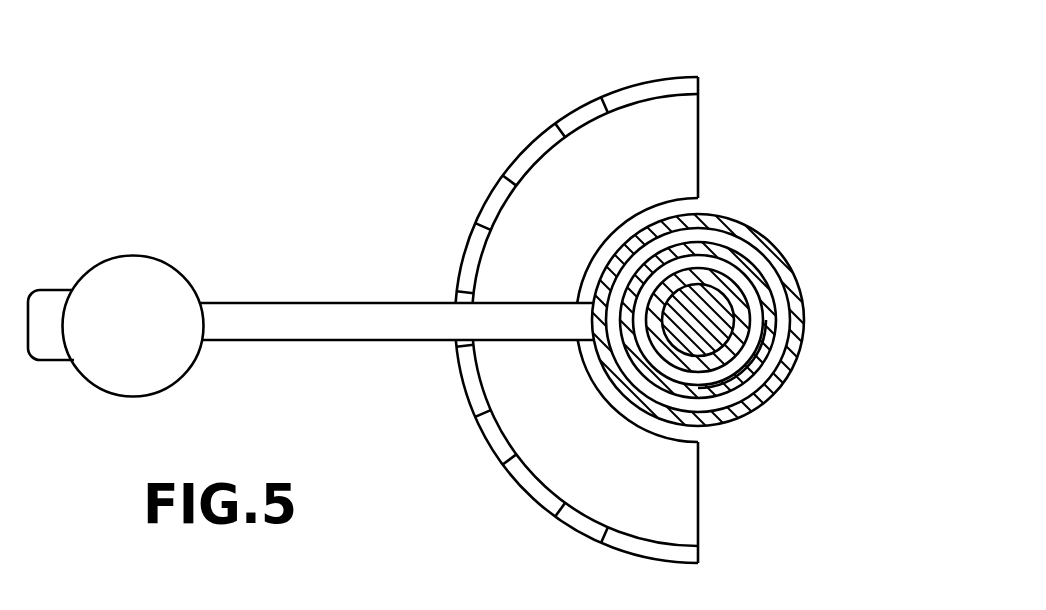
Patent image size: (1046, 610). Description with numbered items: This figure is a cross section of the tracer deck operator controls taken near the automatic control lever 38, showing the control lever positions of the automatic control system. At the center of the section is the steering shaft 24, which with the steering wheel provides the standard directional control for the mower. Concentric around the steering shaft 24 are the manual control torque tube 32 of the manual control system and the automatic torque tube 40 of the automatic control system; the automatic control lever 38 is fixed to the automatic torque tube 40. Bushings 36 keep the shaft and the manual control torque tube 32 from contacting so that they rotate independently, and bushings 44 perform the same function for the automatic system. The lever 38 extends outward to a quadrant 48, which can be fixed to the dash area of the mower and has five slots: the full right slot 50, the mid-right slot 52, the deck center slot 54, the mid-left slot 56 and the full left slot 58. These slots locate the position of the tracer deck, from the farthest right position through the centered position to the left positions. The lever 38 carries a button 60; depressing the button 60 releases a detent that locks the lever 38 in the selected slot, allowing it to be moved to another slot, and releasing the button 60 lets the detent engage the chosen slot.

The steering shaft 24 is at (705, 300).
The manual control torque tube 32 is at (752, 343).
The bushings 36 is at (745, 322).
The automatic control lever 38 is at (293, 303).
The automatic torque tube 40 is at (712, 240).
The bushings 44 is at (712, 252).
The quadrant 48 is at (601, 219).
The full right slot 50 is at (568, 133).
The mid-right slot 52 is at (483, 207).
The deck center slot 54 is at (456, 345).
The mid-left slot 56 is at (490, 442).
The full left slot 58 is at (583, 527).
The button 60 is at (52, 291).